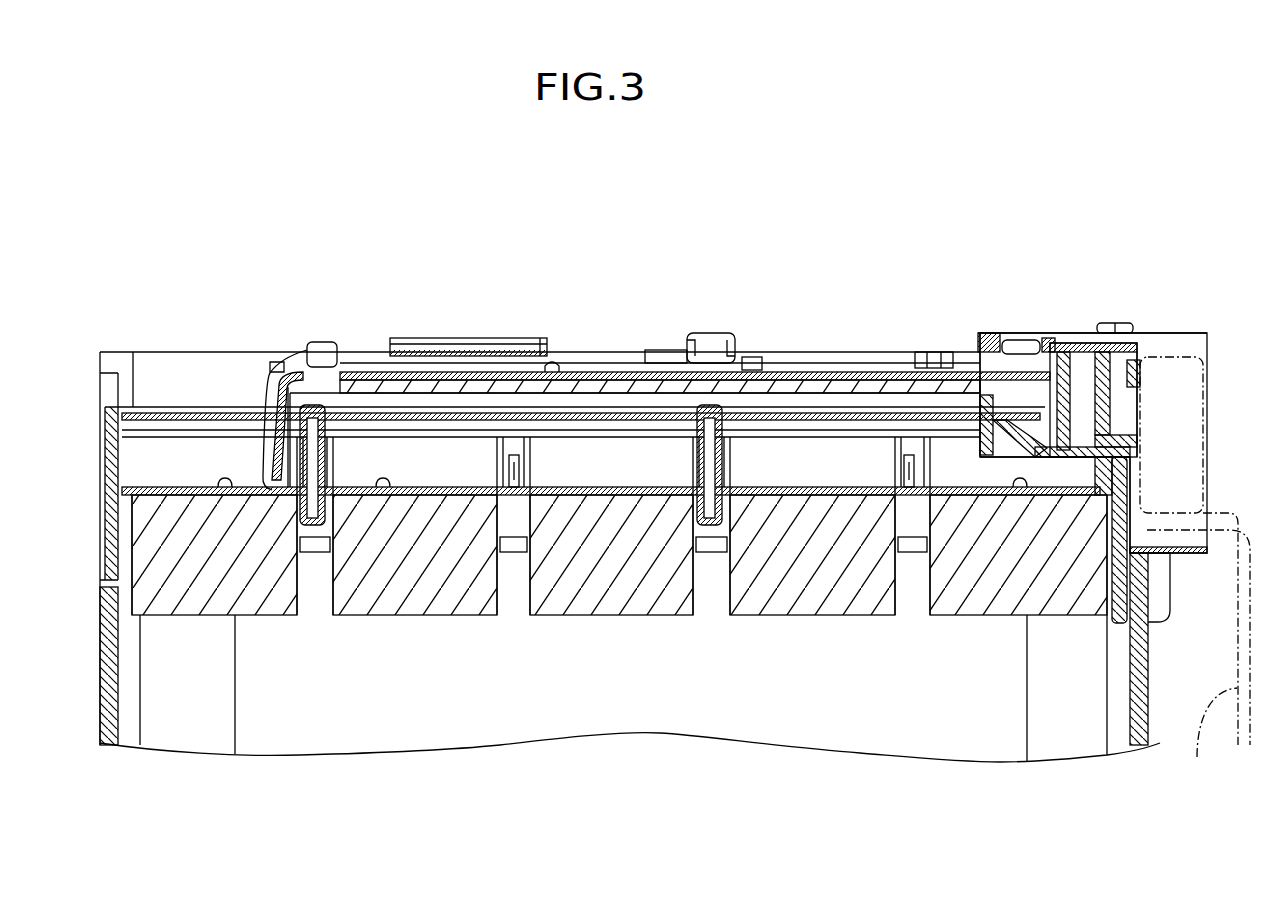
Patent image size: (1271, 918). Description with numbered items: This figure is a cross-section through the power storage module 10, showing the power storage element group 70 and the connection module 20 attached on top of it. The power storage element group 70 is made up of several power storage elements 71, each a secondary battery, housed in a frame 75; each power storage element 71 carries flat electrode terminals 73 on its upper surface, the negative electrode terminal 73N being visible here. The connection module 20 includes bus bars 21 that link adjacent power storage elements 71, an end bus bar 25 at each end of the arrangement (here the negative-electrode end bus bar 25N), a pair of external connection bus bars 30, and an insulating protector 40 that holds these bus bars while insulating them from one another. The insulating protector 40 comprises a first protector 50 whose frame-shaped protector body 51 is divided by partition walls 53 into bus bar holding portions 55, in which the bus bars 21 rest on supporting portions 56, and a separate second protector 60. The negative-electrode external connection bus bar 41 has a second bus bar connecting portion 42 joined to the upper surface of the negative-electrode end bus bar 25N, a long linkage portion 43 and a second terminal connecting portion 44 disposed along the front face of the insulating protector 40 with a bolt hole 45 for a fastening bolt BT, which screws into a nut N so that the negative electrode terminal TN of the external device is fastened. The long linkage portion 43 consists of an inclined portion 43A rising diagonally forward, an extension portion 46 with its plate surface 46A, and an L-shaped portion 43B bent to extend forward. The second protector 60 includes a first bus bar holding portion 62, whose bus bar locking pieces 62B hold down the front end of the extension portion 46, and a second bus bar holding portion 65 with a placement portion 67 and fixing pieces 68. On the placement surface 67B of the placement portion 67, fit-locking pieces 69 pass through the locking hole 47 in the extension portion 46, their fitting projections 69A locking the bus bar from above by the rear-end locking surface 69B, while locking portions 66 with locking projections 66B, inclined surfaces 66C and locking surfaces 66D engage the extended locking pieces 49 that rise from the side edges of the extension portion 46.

The power storage module 10 is at (110, 272).
The connection module 20 is at (614, 320).
The bus bar 21 is at (443, 485).
The negative-electrode end bus bar 25N is at (575, 381).
The end bus bar 25 is at (575, 413).
The external connection bus bar 30 is at (1083, 345).
The insulating protector 40 is at (1050, 306).
The negative-electrode external connection bus bar 41 is at (1093, 399).
The second bus bar connecting portion 42 is at (225, 487).
The long linkage portion 43 is at (560, 374).
The inclined portion 43A is at (270, 480).
The L-shaped portion 43B is at (1110, 347).
The second terminal connecting portion 44 is at (1137, 365).
The bolt hole 45 is at (1135, 437).
The extension portion 46 is at (808, 380).
The plate surface 46A is at (540, 347).
The locking hole 47 is at (337, 362).
The extended locking piece 49 is at (752, 356).
The first protector 50 is at (894, 341).
The protector body 51 is at (148, 365).
The partition wall 53 is at (724, 482).
The bus bar holding portion 55 is at (472, 447).
The supporting portion 56 is at (510, 527).
The second protector 60 is at (1010, 328).
The first bus bar holding portion 62 is at (1048, 328).
The bus bar locking piece 62B is at (1022, 347).
The second bus bar holding portion 65 is at (658, 420).
The locking portion 66 is at (707, 322).
The locking projection 66B is at (681, 338).
The inclined surface 66C is at (720, 345).
The locking surface 66D is at (660, 352).
The placement portion 67 is at (863, 390).
The placement surface 67B is at (562, 372).
The fixing piece 68 is at (447, 350).
The fit-locking piece 69 is at (326, 338).
The fitting projection 69A is at (297, 343).
The rear-end locking surface 69B is at (282, 353).
The power storage element group 70 is at (619, 675).
The power storage element 71 is at (858, 597).
The electrode terminal 73 is at (383, 487).
The negative electrode terminal 73N is at (771, 639).
The frame 75 is at (100, 655).
The nut N is at (1137, 383).
The fastening bolt BT is at (1197, 424).
The negative electrode terminal TN is at (1198, 650).